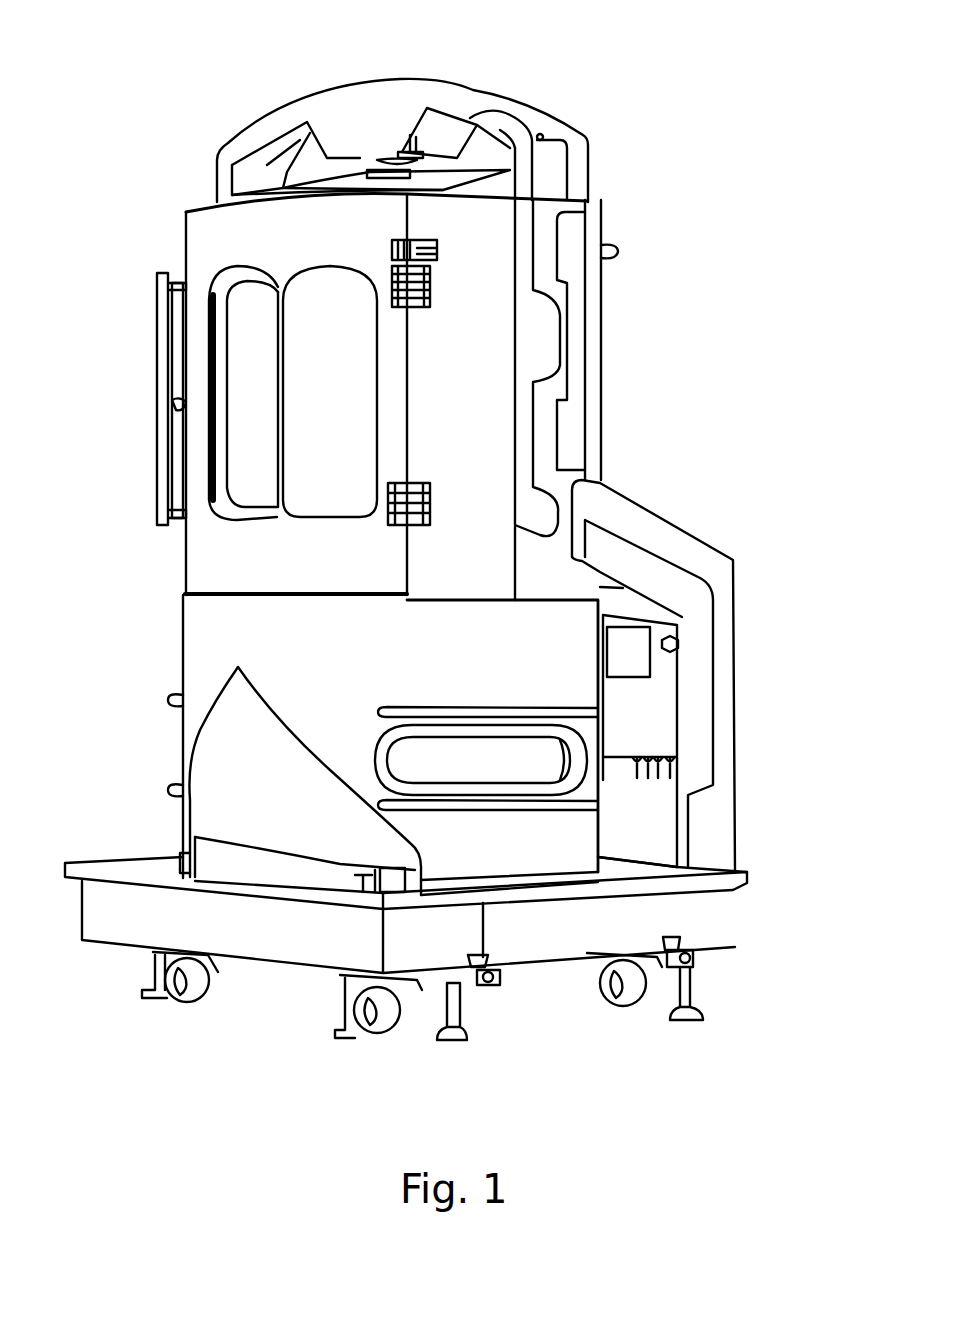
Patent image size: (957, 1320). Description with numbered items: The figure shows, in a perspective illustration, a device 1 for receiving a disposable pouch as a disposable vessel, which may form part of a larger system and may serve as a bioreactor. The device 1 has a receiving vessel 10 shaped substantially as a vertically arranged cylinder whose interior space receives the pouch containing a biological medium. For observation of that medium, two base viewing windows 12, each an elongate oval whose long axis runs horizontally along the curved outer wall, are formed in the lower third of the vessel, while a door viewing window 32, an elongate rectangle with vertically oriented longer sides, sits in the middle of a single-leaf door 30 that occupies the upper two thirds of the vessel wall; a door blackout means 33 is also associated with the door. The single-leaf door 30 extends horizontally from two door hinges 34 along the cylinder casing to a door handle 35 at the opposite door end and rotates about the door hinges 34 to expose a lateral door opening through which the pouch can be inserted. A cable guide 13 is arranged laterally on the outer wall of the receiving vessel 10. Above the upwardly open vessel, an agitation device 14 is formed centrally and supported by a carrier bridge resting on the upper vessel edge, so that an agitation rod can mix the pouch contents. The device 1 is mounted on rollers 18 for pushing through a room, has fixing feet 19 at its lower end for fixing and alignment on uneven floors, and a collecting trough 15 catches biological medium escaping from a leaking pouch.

The device 1 is at (858, 293).
The receiving vessel 10 is at (193, 655).
The base viewing window 12 is at (397, 760).
The cable guide 13 is at (575, 428).
The agitation device 14 is at (344, 108).
The collecting trough 15 is at (120, 935).
The rollers 18 is at (357, 1027).
The fixing feet 19 is at (470, 1038).
The single-leaf door 30 is at (200, 563).
The door viewing window 32 is at (260, 297).
The door blackout means 33 is at (330, 283).
The door hinge 34 is at (425, 283).
The door handle 35 is at (160, 488).